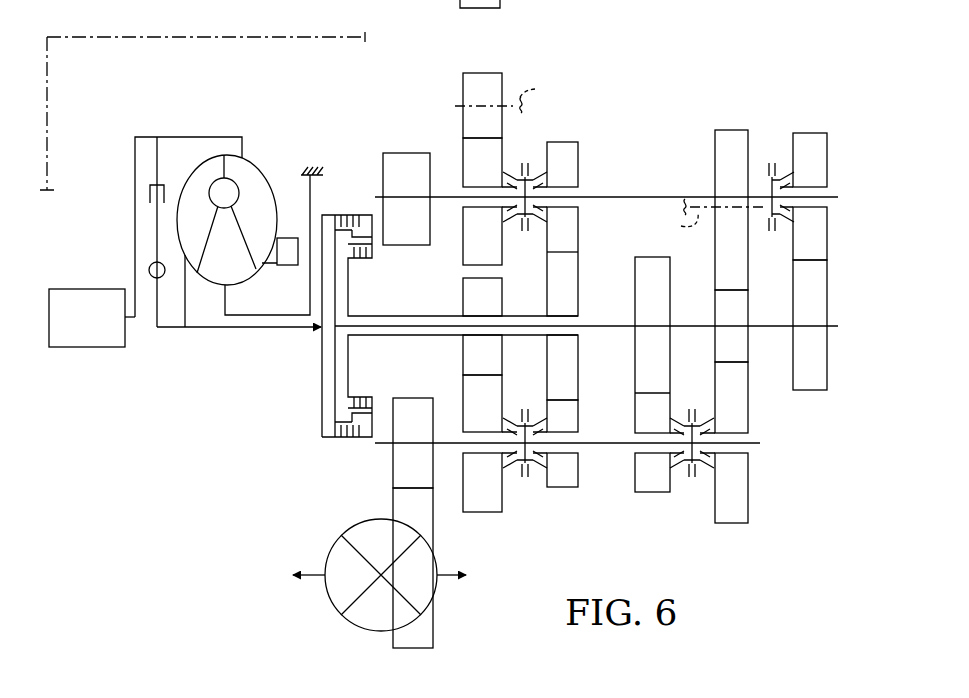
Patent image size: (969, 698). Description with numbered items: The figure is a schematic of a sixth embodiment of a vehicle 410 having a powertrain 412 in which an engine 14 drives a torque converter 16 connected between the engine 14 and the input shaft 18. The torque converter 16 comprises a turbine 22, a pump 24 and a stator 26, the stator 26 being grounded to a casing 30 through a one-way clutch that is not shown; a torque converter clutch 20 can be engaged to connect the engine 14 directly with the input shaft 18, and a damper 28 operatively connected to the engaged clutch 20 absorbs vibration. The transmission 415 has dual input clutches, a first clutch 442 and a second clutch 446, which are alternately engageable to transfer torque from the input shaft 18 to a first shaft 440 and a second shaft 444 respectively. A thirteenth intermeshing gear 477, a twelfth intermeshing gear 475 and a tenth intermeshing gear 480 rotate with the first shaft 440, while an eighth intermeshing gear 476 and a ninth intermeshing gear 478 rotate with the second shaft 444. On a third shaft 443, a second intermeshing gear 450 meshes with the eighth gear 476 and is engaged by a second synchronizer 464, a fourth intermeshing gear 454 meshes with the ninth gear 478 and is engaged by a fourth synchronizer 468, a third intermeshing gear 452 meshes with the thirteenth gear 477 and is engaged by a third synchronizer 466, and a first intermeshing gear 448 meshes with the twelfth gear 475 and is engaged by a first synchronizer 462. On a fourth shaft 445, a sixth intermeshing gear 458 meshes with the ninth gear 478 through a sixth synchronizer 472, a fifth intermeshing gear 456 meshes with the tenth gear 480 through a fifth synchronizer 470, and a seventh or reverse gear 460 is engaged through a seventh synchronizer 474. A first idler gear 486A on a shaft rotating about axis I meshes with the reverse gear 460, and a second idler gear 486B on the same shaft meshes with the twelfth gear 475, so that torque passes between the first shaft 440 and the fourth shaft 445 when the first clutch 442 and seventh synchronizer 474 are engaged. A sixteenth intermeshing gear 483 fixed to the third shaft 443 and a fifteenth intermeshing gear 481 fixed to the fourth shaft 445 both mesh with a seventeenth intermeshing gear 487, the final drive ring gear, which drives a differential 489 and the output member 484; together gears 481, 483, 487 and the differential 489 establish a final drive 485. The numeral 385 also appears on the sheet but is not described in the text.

The engine 14 is at (105, 350).
The torque converter 16 is at (249, 123).
The input shaft 18 is at (292, 328).
The torque converter clutch 20 is at (148, 178).
The turbine 22 is at (197, 167).
The pump 24 is at (255, 165).
The stator 26 is at (205, 284).
The damper 28 is at (164, 276).
The casing 30 is at (313, 173).
The hydraulic pump 385 is at (414, 1).
The vehicle 410 is at (150, 37).
The powertrain 412 is at (99, 361).
The transmission 415 is at (636, 62).
The first shaft 440 is at (773, 328).
The first clutch 442 is at (351, 198).
The third shaft 443 is at (610, 444).
The second shaft 444 is at (380, 337).
The fourth shaft 445 is at (670, 197).
The second clutch 446 is at (361, 272).
The first intermeshing gear 448 is at (749, 498).
The second intermeshing gear 450 is at (463, 383).
The third intermeshing gear 452 is at (636, 478).
The fourth intermeshing gear 454 is at (578, 404).
The fifth intermeshing gear 456 is at (793, 238).
The sixth intermeshing gear 458 is at (578, 172).
The seventh intermeshing gear 460 is at (463, 163).
The first synchronizer 462 is at (700, 468).
The second synchronizer 464 is at (510, 468).
The third synchronizer 466 is at (677, 468).
The fourth synchronizer 468 is at (540, 468).
The fifth synchronizer 470 is at (783, 160).
The sixth synchronizer 472 is at (537, 163).
The seventh synchronizer 474 is at (509, 163).
The twelfth intermeshing gear 475 is at (713, 337).
The eighth intermeshing gear 476 is at (463, 360).
The thirteenth intermeshing gear 477 is at (670, 295).
The ninth intermeshing gear 478 is at (578, 355).
The tenth intermeshing gear 480 is at (793, 280).
The fifteenth intermeshing gear 481 is at (410, 153).
The sixteenth intermeshing gear 483 is at (393, 477).
The output member 484 is at (312, 573).
The final drive 485 is at (356, 632).
The first idler gear 486A is at (518, 61).
The second idler gear 486B is at (740, 130).
The seventeenth intermeshing gear 487 is at (434, 622).
The differential 489 is at (337, 612).